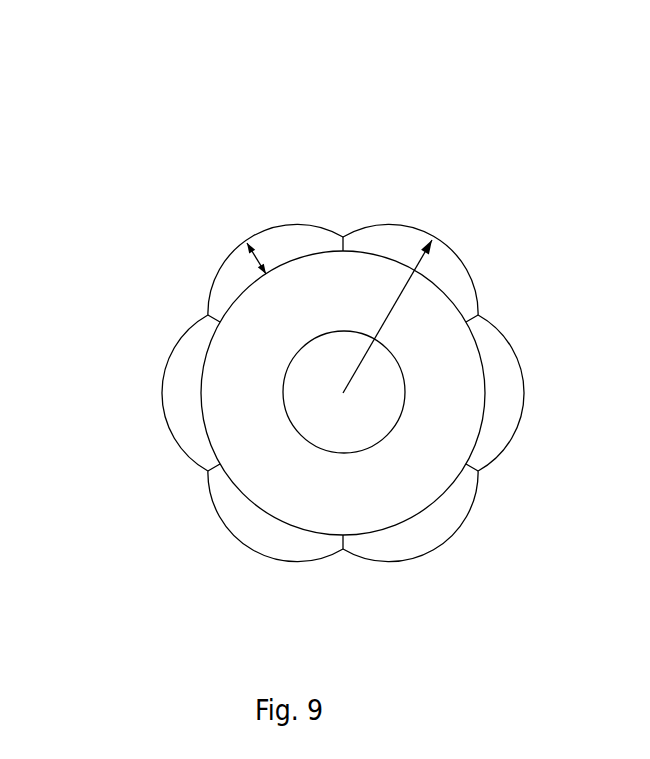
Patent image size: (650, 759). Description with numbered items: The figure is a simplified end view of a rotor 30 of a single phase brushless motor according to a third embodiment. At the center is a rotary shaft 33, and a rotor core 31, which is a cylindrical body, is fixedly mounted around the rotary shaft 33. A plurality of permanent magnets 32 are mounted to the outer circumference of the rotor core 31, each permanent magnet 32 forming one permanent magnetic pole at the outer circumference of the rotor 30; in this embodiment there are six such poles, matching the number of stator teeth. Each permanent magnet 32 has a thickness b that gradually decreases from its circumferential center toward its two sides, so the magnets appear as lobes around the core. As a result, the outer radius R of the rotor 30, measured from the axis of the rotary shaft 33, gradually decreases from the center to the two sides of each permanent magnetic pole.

The rotor 30 is at (386, 64).
The rotor core 31 is at (245, 377).
The permanent magnet 32 is at (322, 243).
The rotary shaft 33 is at (317, 422).
The thickness b is at (258, 242).
The outer radius R is at (386, 318).